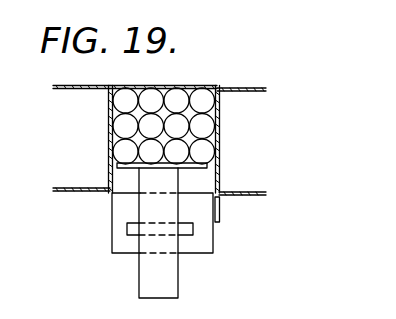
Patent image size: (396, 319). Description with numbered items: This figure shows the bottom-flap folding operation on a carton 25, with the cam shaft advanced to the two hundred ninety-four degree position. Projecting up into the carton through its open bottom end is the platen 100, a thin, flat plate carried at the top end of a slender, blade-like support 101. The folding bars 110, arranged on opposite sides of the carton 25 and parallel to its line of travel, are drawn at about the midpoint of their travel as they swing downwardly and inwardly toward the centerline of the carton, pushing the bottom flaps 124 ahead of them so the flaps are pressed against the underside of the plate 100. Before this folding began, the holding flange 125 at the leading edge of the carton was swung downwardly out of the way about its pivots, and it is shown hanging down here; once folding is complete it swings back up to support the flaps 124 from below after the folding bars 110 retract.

The carton 25 is at (108, 128).
The platen 100 is at (195, 168).
The support 101 is at (168, 275).
The folding bar 110 is at (190, 228).
The bottom flap 124 is at (120, 244).
The holding flange 125 is at (221, 216).